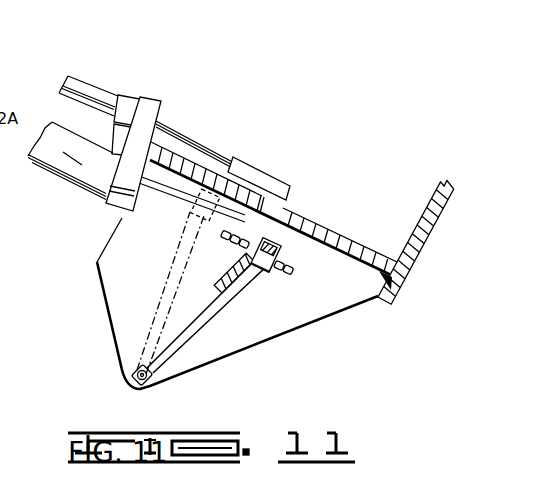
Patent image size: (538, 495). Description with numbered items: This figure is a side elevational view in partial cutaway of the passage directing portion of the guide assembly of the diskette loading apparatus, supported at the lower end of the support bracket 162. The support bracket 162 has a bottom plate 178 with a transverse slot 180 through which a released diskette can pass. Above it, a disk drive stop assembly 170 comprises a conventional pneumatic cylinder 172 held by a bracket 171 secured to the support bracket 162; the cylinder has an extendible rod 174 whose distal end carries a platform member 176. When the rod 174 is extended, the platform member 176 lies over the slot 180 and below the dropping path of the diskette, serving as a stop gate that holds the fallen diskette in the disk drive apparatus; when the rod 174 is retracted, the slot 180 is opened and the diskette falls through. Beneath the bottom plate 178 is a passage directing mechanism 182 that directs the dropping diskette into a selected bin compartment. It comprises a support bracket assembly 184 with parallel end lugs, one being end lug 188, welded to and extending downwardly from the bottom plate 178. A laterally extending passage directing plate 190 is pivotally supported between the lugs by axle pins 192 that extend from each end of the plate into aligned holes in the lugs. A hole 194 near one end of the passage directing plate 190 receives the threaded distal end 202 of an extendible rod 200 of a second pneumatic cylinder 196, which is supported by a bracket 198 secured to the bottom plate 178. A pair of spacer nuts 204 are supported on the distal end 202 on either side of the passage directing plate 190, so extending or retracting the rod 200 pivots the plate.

The support bracket 162 is at (430, 240).
The disk drive stop assembly 170 is at (238, 148).
The bracket 171 is at (150, 97).
The pneumatic cylinder 172 is at (95, 87).
The extendible rod 174 is at (181, 134).
The platform member 176 is at (256, 161).
The bottom plate 178 is at (300, 219).
The transverse slot 180 is at (266, 197).
The passage directing mechanism 182 is at (53, 96).
The support bracket assembly 184 is at (96, 244).
The end lug 188 is at (282, 334).
The passage directing plate 190 is at (176, 275).
The axle pins 192 is at (153, 385).
The hole 194 is at (263, 273).
The pneumatic cylinder 196 is at (63, 158).
The bracket 198 is at (108, 211).
The extendible rod 200 is at (137, 203).
The threaded distal end 202 is at (300, 271).
The spacer nuts 204 is at (238, 262).